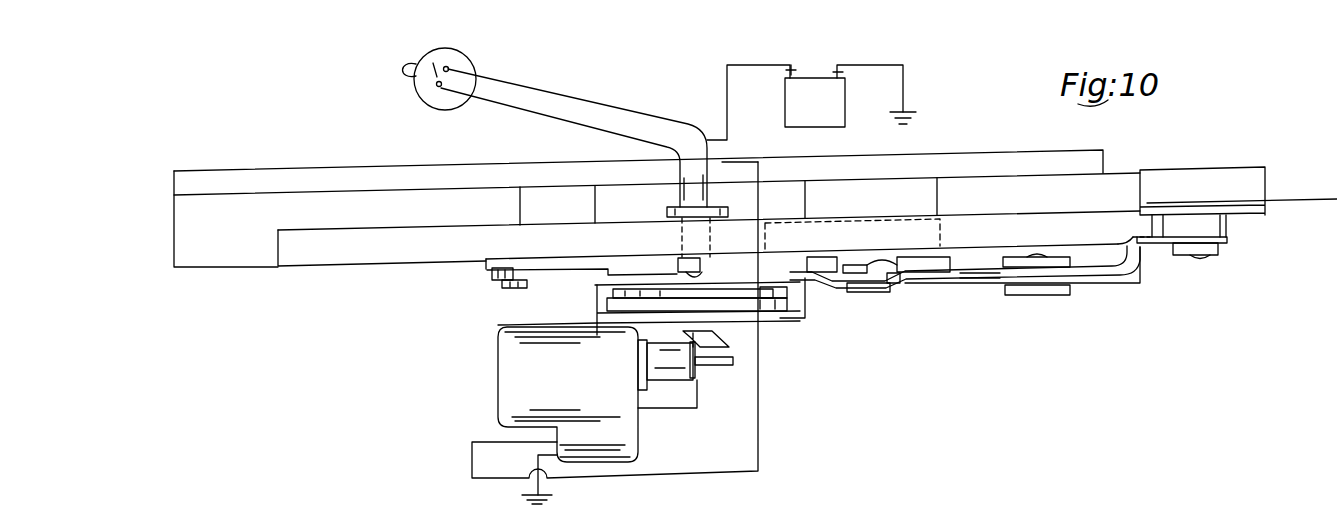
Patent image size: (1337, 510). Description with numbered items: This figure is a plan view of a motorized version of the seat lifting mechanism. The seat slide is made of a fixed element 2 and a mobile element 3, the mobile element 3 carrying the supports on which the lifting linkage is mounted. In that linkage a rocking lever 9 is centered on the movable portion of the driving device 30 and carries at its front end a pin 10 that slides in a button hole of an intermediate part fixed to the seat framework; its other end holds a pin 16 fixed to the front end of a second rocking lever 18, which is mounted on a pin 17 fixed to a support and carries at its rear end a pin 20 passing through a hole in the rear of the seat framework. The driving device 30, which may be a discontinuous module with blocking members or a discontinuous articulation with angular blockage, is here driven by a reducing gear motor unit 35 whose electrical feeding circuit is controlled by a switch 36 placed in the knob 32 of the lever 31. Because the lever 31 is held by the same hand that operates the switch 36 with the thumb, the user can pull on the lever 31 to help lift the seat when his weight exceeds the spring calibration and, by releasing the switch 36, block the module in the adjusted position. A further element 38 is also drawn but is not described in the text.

The fixed element 2 is at (1039, 159).
The mobile element 3 is at (1194, 178).
The rocking lever 9 is at (587, 283).
The pin 10 is at (537, 291).
The pin 16 is at (877, 292).
The pin 17 is at (1066, 296).
The second rocking lever 18 is at (969, 268).
The pin 20 is at (1202, 257).
The driving device 30 is at (777, 318).
The lever 31 is at (597, 102).
The knob 32 is at (477, 65).
The switch 36 is at (423, 78).
The reducing gear motor unit 35 is at (512, 373).
The cam lever 38 is at (732, 348).